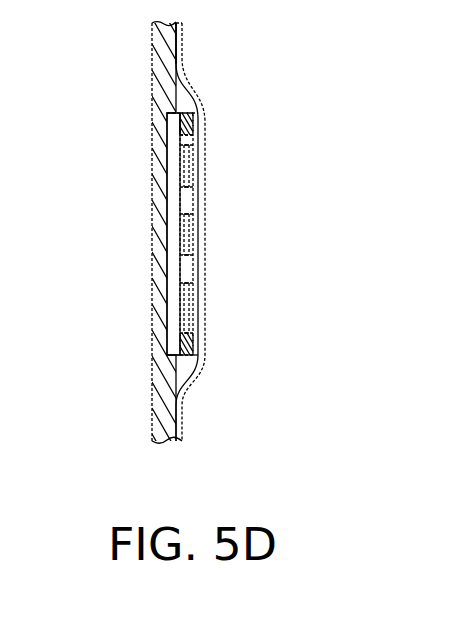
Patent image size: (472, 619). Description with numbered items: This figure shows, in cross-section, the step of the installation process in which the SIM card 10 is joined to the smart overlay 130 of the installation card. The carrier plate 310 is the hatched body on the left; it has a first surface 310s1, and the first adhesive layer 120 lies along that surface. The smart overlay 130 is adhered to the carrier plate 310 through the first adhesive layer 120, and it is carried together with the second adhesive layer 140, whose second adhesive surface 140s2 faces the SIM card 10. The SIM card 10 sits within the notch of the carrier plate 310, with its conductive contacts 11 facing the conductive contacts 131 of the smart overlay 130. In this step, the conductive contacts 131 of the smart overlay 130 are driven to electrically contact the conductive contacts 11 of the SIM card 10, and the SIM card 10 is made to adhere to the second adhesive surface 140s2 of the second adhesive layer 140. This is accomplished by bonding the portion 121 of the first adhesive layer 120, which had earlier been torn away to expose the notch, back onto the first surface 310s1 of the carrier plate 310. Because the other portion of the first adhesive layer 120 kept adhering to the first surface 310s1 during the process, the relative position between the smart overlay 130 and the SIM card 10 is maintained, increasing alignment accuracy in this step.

The SIM card 10 is at (172, 194).
The conductive contacts 11 is at (185, 153).
The first adhesive layer 120 is at (207, 268).
The portion of the first adhesive layer 121 is at (184, 27).
The smart overlay 130 is at (195, 222).
The conductive contacts 131 is at (193, 165).
The second adhesive layer 140 is at (193, 112).
The second adhesive surface 140s2 is at (176, 119).
The carrier plate 310 is at (155, 87).
The first surface 310s1 is at (181, 63).